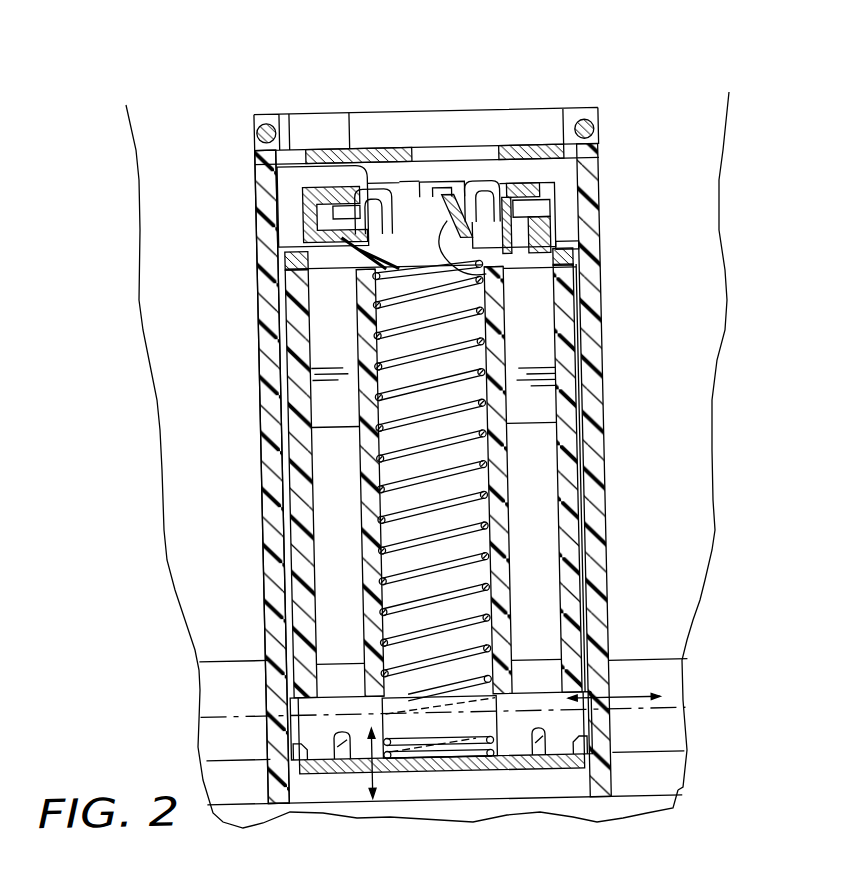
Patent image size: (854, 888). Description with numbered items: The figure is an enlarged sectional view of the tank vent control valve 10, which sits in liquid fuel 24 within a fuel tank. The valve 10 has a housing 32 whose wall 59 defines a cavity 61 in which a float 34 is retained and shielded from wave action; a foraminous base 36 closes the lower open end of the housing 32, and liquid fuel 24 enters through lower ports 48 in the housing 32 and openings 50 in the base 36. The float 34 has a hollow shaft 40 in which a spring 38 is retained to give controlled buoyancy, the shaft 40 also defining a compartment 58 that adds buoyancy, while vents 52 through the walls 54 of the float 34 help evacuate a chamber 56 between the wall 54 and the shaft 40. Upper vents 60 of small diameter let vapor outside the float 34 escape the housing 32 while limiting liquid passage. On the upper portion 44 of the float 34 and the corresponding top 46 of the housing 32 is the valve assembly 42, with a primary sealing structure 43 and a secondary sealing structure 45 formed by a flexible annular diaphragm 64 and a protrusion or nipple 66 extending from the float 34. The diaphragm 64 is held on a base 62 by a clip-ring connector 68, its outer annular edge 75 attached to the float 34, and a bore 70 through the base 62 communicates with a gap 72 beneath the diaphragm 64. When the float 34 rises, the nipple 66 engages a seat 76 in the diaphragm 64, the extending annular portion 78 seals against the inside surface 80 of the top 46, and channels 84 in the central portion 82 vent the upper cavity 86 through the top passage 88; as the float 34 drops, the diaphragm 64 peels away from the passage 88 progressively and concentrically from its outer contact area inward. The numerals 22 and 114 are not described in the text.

The tank vent control valve 10 is at (98, 180).
The surrounding ground 22 is at (771, 583).
The liquid fuel 24 is at (645, 667).
The housing 32 is at (257, 368).
The float 34 is at (585, 373).
The foraminous base 36 is at (433, 775).
The spring 38 is at (475, 486).
The hollow shaft 40 is at (518, 547).
The valve assembly 42 is at (266, 190).
The primary sealing structure 43 is at (449, 182).
The upper portion 44 is at (616, 226).
The secondary sealing structure 45 is at (606, 172).
The top 46 is at (352, 138).
The lower ports 48 is at (606, 722).
The openings 50 is at (498, 776).
The vents 52 is at (267, 277).
The walls 54 is at (558, 352).
The chamber 56 is at (330, 468).
The compartment 58 is at (404, 557).
The wall 59 is at (271, 509).
The upper vents 60 is at (263, 211).
The cavity 61 is at (273, 417).
The base 62 is at (596, 183).
The flexible diaphragm 64 is at (503, 182).
The protrusion 66 is at (364, 340).
The connector 68 is at (262, 224).
The bore 70 is at (263, 242).
The gap 72 is at (360, 278).
The outer annular edge 75 is at (596, 248).
The seat 76 is at (500, 284).
The extending annular portion 78 is at (264, 162).
The inside surface 80 is at (557, 172).
The central portion 82 is at (476, 200).
The channels 84 is at (429, 140).
The upper cavity 86 is at (362, 112).
The passage 88 is at (419, 139).
The port 114 is at (538, 158).